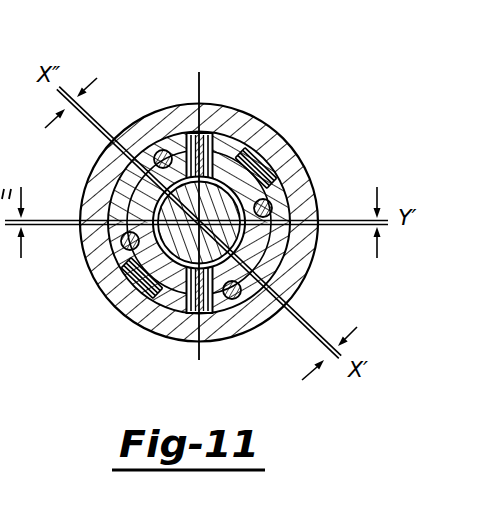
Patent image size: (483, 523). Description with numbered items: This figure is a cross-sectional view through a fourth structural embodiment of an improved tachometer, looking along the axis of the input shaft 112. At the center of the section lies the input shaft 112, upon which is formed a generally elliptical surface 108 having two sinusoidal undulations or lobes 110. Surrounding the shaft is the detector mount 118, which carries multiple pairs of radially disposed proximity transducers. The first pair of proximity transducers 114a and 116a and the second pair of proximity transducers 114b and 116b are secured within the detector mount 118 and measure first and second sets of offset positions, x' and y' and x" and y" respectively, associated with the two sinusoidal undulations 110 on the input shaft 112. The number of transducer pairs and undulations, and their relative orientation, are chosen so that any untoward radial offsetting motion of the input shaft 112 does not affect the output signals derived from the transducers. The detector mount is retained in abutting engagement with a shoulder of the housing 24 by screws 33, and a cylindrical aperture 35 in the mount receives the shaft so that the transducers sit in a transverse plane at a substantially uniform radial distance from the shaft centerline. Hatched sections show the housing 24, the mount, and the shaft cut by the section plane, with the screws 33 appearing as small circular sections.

The housing 24 is at (262, 127).
The screws 33 is at (162, 150).
The cylindrical aperture 35 is at (120, 218).
The generally elliptical surface 108 is at (290, 248).
The sinusoidal undulation 110 is at (294, 190).
The input shaft 112 is at (110, 265).
The proximity transducer 114a is at (268, 162).
The proximity transducer 114b is at (113, 290).
The proximity transducer 116a is at (209, 130).
The proximity transducer 116b is at (207, 318).
The detector mount 118 is at (157, 303).